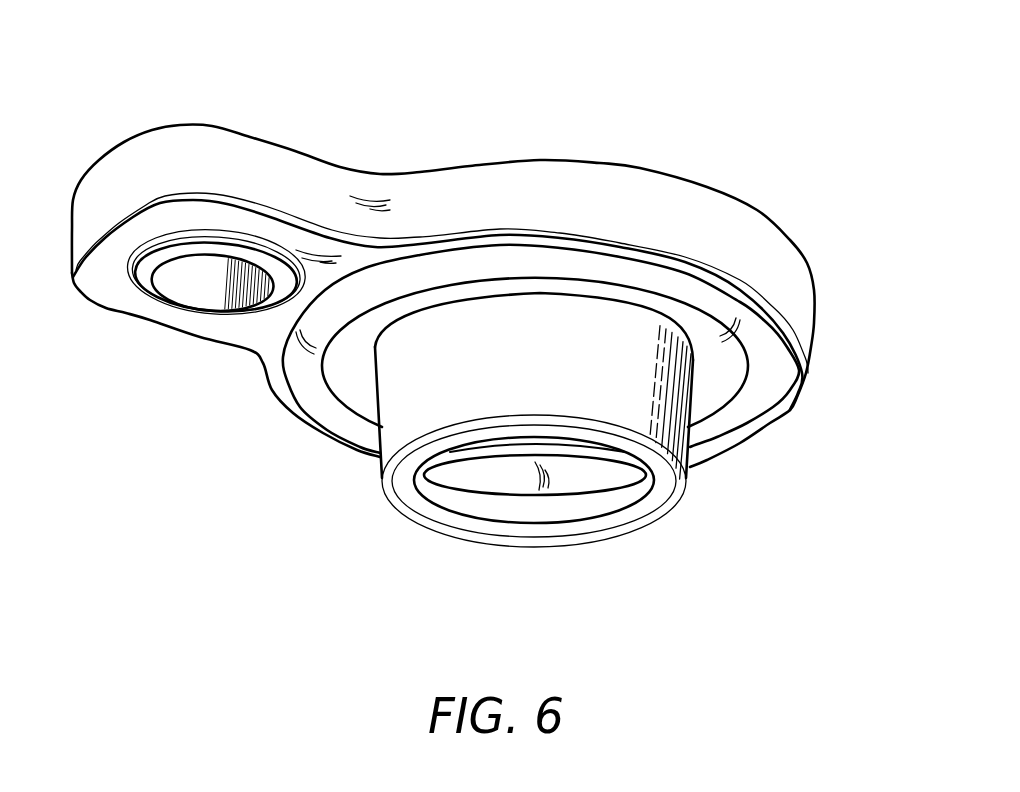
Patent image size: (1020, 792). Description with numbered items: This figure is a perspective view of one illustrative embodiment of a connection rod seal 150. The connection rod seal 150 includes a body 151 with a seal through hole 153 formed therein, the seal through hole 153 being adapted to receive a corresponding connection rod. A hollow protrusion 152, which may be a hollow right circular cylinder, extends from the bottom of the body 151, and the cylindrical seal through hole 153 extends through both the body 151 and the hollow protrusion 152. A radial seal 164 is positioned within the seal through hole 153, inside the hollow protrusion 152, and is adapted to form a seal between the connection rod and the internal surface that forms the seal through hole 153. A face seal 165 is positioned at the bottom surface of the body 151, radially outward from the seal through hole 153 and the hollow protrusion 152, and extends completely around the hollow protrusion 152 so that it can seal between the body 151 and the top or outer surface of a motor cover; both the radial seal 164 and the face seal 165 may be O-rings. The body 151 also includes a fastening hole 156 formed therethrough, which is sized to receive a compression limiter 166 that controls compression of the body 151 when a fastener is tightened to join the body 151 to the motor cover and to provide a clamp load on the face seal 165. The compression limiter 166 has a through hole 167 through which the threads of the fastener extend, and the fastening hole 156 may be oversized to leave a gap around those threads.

The connection rod seal 150 is at (448, 307).
The body 151 is at (737, 230).
The hollow protrusion 152 is at (663, 497).
The seal through hole 153 is at (567, 507).
The fastening hole 156 is at (128, 281).
The radial seal 164 is at (470, 463).
The face seal 165 is at (747, 413).
The compression limiter 166 is at (161, 301).
The through hole 167 is at (217, 285).